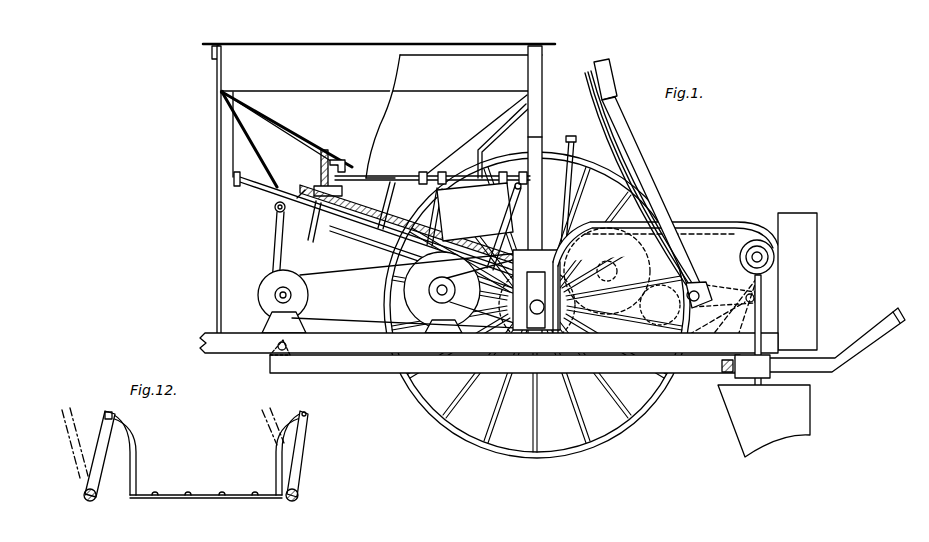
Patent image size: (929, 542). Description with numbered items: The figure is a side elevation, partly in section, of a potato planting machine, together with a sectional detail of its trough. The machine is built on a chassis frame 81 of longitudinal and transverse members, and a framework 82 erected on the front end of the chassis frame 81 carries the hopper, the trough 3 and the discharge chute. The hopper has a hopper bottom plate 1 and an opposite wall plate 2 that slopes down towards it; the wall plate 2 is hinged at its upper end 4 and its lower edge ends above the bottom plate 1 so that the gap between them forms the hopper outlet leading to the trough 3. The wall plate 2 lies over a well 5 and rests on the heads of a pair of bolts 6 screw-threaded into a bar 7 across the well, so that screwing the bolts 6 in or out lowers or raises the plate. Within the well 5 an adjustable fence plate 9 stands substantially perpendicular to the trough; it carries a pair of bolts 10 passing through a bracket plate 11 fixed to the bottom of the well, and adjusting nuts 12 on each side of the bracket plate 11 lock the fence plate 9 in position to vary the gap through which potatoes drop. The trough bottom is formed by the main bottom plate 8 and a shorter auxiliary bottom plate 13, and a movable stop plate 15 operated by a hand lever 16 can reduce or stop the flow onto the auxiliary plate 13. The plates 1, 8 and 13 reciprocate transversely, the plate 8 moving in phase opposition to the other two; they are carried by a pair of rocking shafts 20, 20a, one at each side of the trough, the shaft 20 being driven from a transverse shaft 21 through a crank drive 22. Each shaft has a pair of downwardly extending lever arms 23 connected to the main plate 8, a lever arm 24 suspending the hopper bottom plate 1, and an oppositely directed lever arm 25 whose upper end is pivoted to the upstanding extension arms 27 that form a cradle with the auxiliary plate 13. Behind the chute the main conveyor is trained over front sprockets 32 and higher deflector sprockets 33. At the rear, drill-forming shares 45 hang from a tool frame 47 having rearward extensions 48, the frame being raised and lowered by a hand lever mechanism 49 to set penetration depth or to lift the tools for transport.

In FIG. 1, the hopper bottom plate 1 is at (365, 176).
In FIG. 1, the wall plate 2 is at (300, 140).
In FIG. 1, the trough 3 is at (475, 212).
In FIG. 1, the upper end 4 is at (224, 91).
In FIG. 1, the well 5 is at (268, 176).
In FIG. 1, the bolts 6 is at (328, 167).
In FIG. 1, the bar 7 is at (333, 166).
In FIG. 1, the main bottom plate 8 is at (362, 214).
In FIG. 1, the fence plate 9 is at (330, 192).
In FIG. 1, the bolts 10 is at (290, 186).
In FIG. 1, the bracket plate 11 is at (306, 200).
In FIG. 1, the adjusting nuts 12 is at (330, 162).
In FIG. 1, the auxiliary bottom plate 13 is at (498, 228).
In FIG. 12, the auxiliary bottom plate 13 is at (199, 498).
In FIG. 1, the stop plate 15 is at (390, 243).
In FIG. 1, the hand lever 16 is at (545, 111).
In FIG. 12, the rocking shaft 20 is at (298, 497).
In FIG. 12, the rocking shaft 20a is at (93, 501).
In FIG. 1, the transverse shaft 21 is at (303, 290).
In FIG. 1, the crank drive 22 is at (276, 231).
In FIG. 1, the lever arms 23 is at (320, 232).
In FIG. 1, the lever arm 24 is at (380, 205).
In FIG. 1, the lever arm 25 is at (505, 213).
In FIG. 12, the lever arm 25 is at (98, 462).
In FIG. 12, the extension arms 27 is at (136, 436).
In FIG. 1, the front sprockets 32 is at (505, 337).
In FIG. 1, the deflector sprockets 33 is at (635, 273).
In FIG. 1, the drill-forming shares 45 is at (726, 414).
In FIG. 1, the tool frame 47 is at (355, 374).
In FIG. 1, the rearward extensions 48 is at (845, 355).
In FIG. 1, the hand lever mechanism 49 is at (627, 130).
In FIG. 1, the chassis frame 81 is at (243, 355).
In FIG. 1, the framework 82 is at (216, 245).